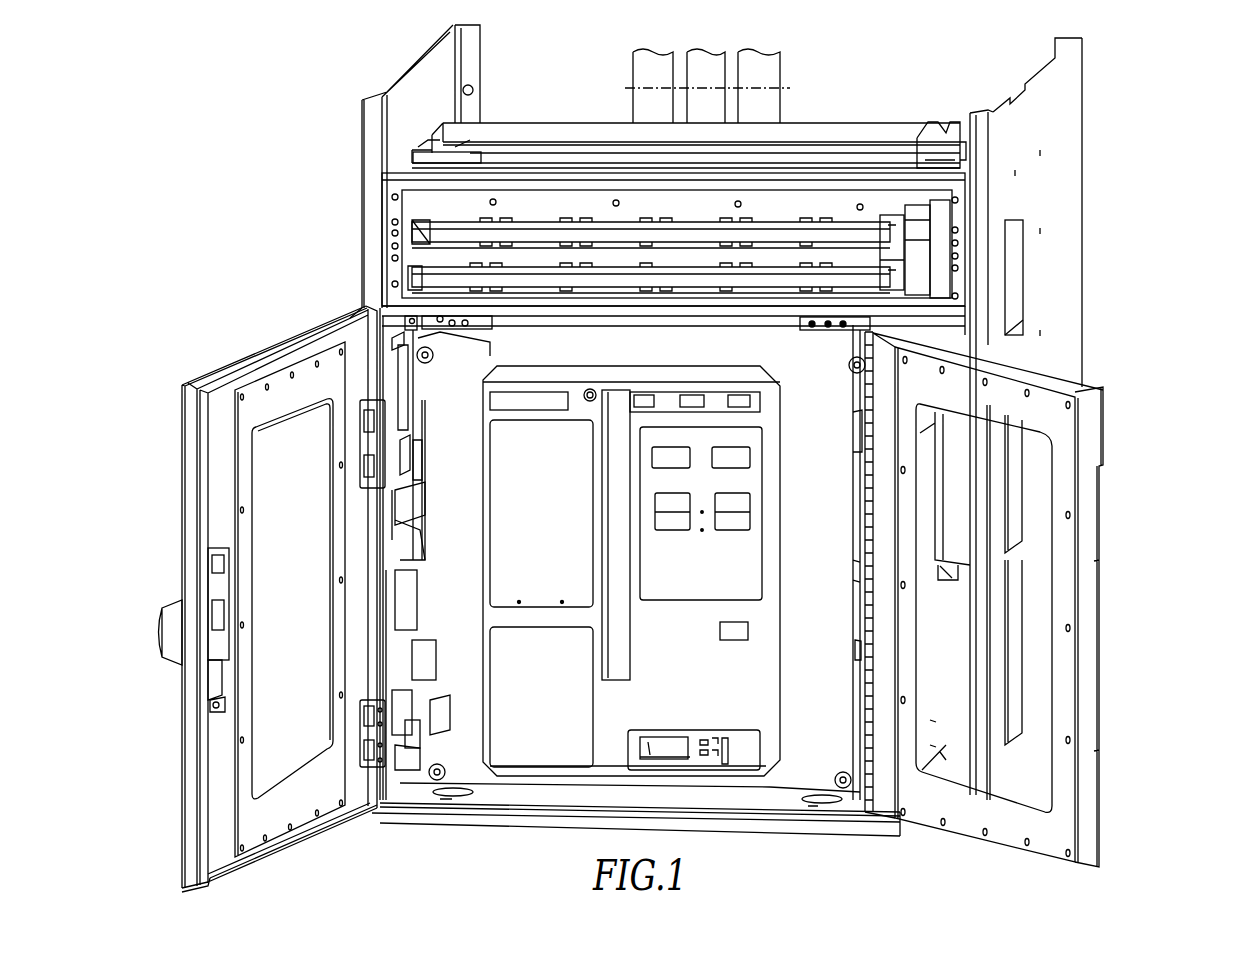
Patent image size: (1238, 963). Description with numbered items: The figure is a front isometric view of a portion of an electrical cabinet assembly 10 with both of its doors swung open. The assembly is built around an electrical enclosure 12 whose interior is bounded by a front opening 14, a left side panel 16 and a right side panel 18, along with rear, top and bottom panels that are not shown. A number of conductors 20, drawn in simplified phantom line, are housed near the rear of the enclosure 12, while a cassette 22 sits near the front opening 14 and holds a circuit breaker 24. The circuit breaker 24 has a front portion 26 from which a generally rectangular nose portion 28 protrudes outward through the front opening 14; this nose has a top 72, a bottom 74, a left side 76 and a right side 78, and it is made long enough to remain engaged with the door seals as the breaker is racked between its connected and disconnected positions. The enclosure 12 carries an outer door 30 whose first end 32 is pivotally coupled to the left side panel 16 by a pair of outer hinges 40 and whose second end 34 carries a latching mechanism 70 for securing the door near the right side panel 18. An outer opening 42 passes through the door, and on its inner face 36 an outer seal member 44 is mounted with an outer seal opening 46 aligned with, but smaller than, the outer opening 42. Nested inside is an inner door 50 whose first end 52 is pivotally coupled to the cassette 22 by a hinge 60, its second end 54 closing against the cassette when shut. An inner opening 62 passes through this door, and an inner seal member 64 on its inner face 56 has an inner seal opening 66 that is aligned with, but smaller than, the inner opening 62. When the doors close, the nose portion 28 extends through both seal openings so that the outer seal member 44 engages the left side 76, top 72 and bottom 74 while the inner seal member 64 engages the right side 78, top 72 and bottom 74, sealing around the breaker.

The electrical cabinet assembly 10 is at (1150, 112).
The electrical enclosure 12 is at (1062, 42).
The front opening 14 is at (461, 762).
The left side panel 16 is at (362, 218).
The right side panel 18 is at (1068, 178).
The conductors 20 is at (780, 72).
The cassette 22 is at (946, 732).
The circuit breaker 24 is at (640, 598).
The front portion 26 is at (800, 760).
The nose portion 28 is at (480, 376).
The outer door 30 is at (172, 700).
The first end 32 is at (382, 673).
The second end 34 is at (172, 462).
The inner face 36 is at (215, 858).
The outer hinges 40 is at (382, 405).
The outer opening 42 is at (290, 584).
The outer seal member 44 is at (247, 448).
The outer seal opening 46 is at (287, 412).
The inner door 50 is at (1126, 720).
The first end 52 is at (860, 440).
The second end 54 is at (1110, 434).
The inner face 56 is at (1095, 405).
The hinges 60 is at (866, 692).
The inner opening 62 is at (984, 608).
The inner seal member 64 is at (1068, 480).
The inner seal opening 66 is at (1055, 672).
The latching mechanism 70 is at (200, 606).
The top 72 is at (578, 372).
The bottom 74 is at (590, 775).
The left side 76 is at (485, 480).
The right side 78 is at (780, 605).